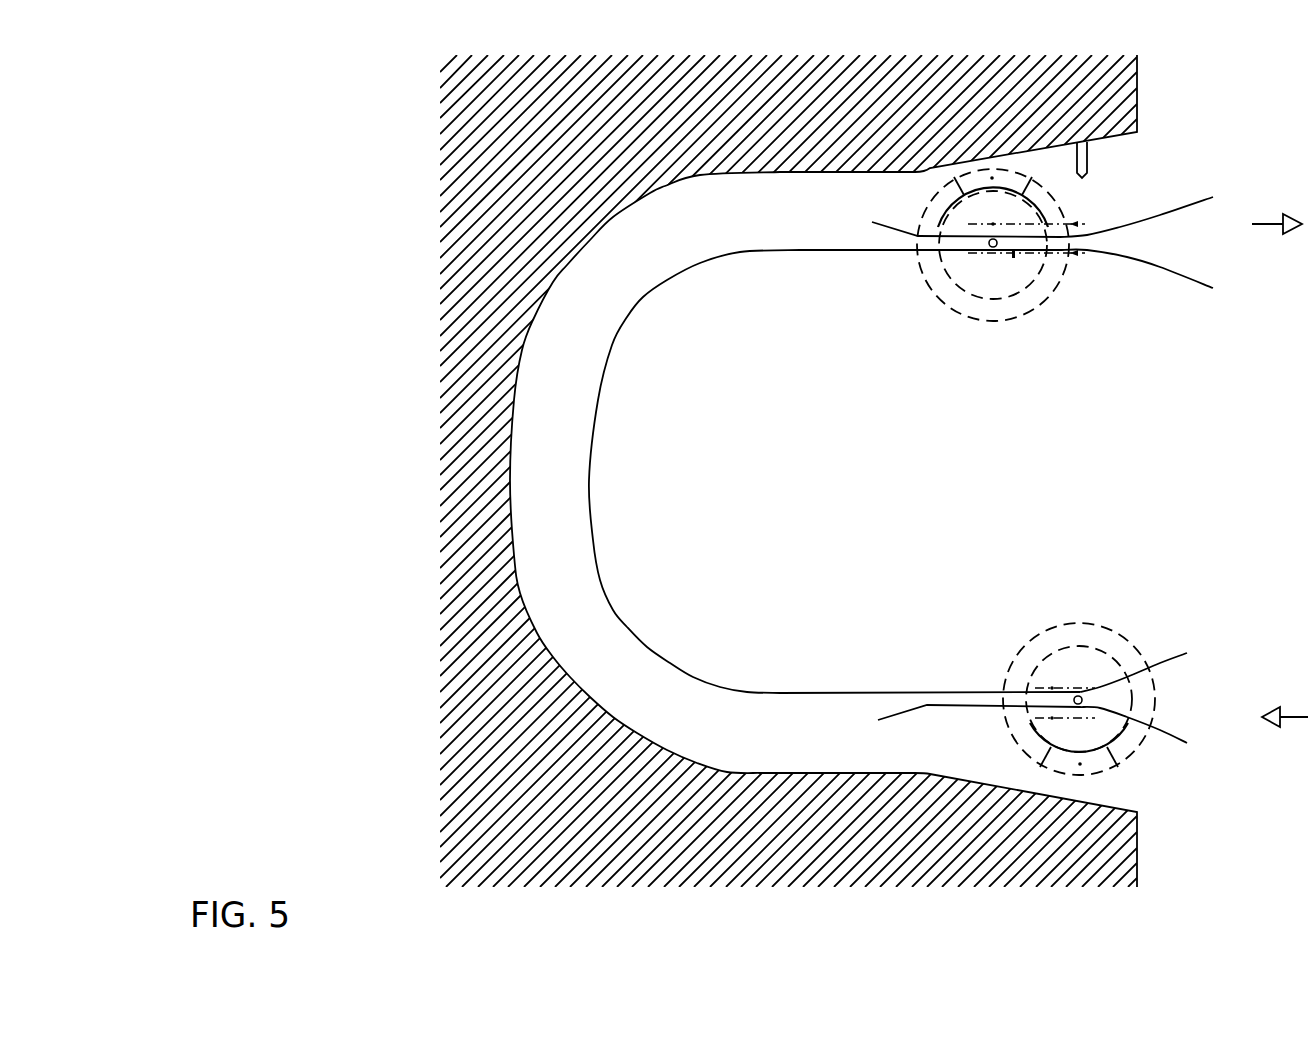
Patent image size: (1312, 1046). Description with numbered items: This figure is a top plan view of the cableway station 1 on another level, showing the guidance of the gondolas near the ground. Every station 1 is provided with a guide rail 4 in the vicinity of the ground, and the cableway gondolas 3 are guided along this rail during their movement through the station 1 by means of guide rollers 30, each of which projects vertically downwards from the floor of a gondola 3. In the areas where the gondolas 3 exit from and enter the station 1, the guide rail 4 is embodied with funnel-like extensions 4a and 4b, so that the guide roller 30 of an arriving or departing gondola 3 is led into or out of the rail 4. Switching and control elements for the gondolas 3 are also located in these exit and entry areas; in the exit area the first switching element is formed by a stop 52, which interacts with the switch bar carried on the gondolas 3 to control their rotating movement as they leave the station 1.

The station 1 is at (860, 508).
The cableway gondola 3 is at (1017, 322).
The guide rail 4 is at (590, 465).
The funnel-like extension 4a is at (1163, 265).
The funnel-like extension 4b is at (1165, 668).
The guide roller 30 is at (992, 247).
The stop 52 is at (1087, 153).